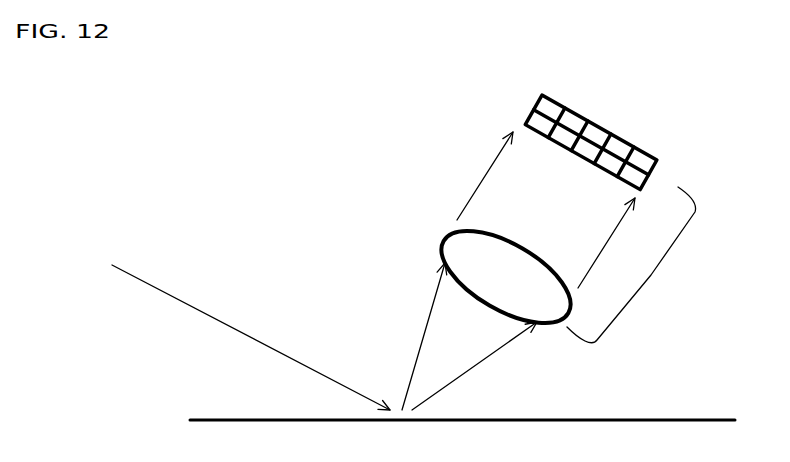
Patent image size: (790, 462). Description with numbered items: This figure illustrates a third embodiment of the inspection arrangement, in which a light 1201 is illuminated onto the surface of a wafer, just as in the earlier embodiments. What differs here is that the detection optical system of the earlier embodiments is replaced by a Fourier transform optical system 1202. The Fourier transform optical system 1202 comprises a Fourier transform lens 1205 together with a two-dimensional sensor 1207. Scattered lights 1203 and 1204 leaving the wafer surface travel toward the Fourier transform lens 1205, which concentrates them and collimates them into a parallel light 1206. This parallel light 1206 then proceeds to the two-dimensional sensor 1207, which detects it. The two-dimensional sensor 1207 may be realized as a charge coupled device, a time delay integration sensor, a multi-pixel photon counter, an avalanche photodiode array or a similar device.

The light 1201 is at (197, 310).
The Fourier transform optical system 1202 is at (651, 275).
The scattered light 1203 is at (427, 325).
The scattered light 1204 is at (475, 362).
The Fourier transform lens 1205 is at (443, 238).
The parallel light 1206 is at (483, 173).
The 2D sensor 1207 is at (623, 102).